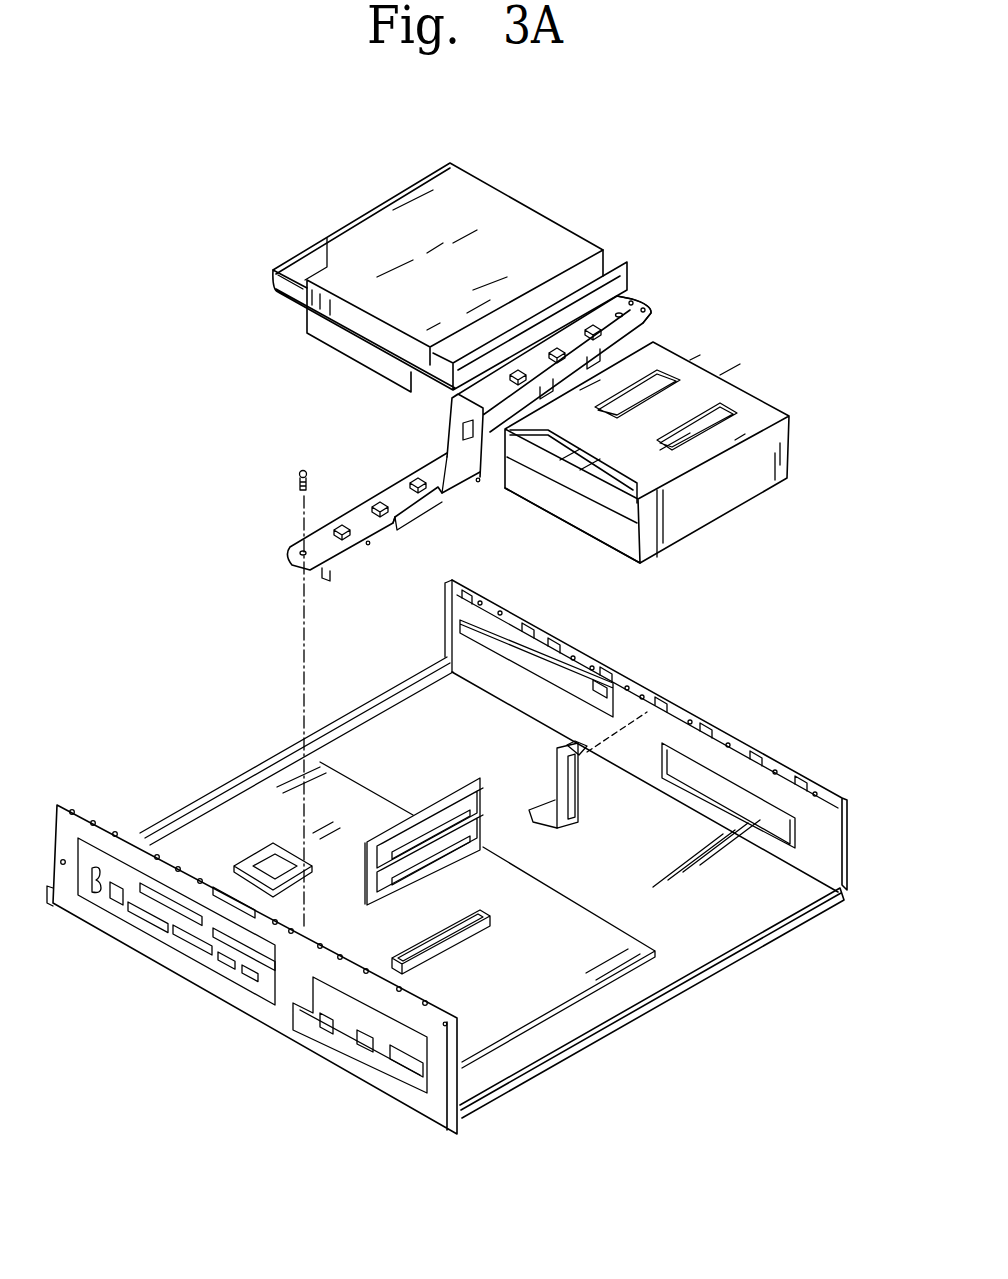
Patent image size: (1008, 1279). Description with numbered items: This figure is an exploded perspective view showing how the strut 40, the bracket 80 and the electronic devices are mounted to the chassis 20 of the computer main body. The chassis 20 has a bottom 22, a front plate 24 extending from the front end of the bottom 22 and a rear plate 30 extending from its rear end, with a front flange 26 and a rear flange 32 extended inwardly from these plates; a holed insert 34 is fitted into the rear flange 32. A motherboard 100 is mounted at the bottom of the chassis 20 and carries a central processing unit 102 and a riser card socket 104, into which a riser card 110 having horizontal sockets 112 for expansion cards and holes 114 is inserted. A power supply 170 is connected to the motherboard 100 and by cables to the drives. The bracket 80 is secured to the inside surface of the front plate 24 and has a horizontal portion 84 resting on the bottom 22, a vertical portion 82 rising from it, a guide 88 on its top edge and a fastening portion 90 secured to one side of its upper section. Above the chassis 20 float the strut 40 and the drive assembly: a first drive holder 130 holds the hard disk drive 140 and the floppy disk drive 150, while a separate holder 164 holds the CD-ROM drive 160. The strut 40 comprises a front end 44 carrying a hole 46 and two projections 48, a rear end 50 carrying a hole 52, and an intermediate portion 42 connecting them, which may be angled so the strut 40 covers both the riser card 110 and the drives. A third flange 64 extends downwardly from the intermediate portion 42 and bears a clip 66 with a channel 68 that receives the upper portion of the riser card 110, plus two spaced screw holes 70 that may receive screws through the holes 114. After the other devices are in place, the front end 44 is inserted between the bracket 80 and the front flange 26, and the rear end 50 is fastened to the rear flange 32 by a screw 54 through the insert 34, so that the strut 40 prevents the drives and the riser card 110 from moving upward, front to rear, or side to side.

The chassis 20 is at (817, 917).
The bottom 22 is at (707, 943).
The front plate 24 is at (825, 852).
The front flange 26 is at (788, 772).
The rear plate 30 is at (357, 1070).
The rear flange 32 is at (363, 980).
The insert 34 is at (303, 938).
The strut 40 is at (283, 562).
The intermediate portion 42 is at (473, 395).
The front end 44 is at (641, 318).
The hole 46 is at (619, 312).
The projections 48 is at (645, 305).
The rear end 50 is at (290, 548).
The hole 52 is at (301, 558).
The screw 54 is at (298, 480).
The third flange 64 is at (453, 483).
The clip 66 is at (420, 518).
The channel 68 is at (393, 524).
The holes 70 is at (367, 546).
The bracket 80 is at (578, 830).
The vertical portion 82 is at (582, 790).
The horizontal portion 84 is at (535, 820).
The guide 88 is at (580, 748).
The fastening portion 90 is at (593, 750).
The motherboard 100 is at (495, 1023).
The central processing unit 102 is at (280, 865).
The riser card socket 104 is at (443, 948).
The riser card 110 is at (445, 835).
The horizontal sockets 112 is at (477, 795).
The holes 114 is at (377, 840).
The first drive holder 130 is at (757, 405).
The hard disk drive 140 is at (583, 490).
The floppy disk drive 150 is at (607, 537).
The CD-ROM drive 160 is at (355, 240).
The holder 164 is at (297, 283).
The power supply 170 is at (337, 338).